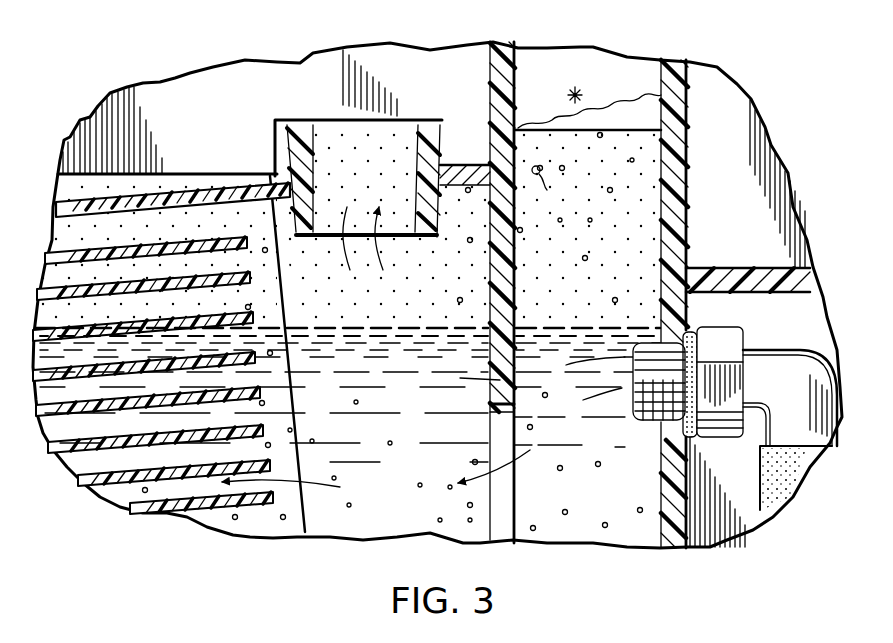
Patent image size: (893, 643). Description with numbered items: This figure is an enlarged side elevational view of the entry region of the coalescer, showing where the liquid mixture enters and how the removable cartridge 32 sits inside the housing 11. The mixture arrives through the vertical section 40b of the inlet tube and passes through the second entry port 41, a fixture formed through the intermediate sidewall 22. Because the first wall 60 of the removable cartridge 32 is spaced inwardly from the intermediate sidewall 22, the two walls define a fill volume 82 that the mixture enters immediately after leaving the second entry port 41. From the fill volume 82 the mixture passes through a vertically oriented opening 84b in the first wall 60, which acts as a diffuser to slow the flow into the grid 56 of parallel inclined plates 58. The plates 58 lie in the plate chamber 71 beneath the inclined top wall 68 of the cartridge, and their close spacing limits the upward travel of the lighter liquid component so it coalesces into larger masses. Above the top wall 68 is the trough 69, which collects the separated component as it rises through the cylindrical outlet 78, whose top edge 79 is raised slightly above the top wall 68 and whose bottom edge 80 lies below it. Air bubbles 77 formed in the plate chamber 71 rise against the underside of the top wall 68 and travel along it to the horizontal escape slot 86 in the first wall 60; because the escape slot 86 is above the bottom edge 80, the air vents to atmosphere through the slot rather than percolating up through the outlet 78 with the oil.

The housing 11 is at (736, 81).
The intermediate sidewall 22 is at (687, 163).
The removable cartridge 32 is at (527, 63).
The vertical section 40b is at (780, 510).
The second entry port 41 is at (658, 428).
The grid 56 is at (117, 488).
The parallel inclined plates 58 is at (208, 201).
The first wall 60 is at (515, 505).
The inclined top wall 68 is at (248, 190).
The trough 69 is at (218, 96).
The plate chamber 71 is at (327, 527).
The air bubbles 77 is at (516, 193).
The outlet 78 is at (450, 128).
The top edge 79 is at (330, 120).
The bottom edge 80 is at (374, 237).
The fill volume 82 is at (637, 533).
The vertically oriented opening 84b is at (500, 533).
The escape slot 86 is at (516, 201).